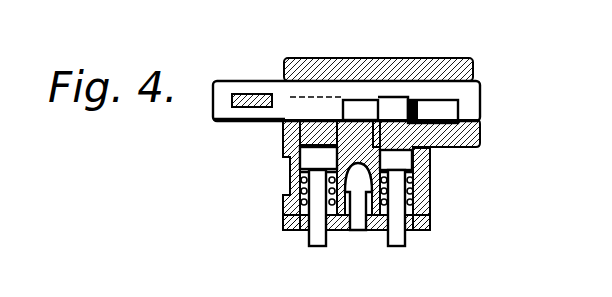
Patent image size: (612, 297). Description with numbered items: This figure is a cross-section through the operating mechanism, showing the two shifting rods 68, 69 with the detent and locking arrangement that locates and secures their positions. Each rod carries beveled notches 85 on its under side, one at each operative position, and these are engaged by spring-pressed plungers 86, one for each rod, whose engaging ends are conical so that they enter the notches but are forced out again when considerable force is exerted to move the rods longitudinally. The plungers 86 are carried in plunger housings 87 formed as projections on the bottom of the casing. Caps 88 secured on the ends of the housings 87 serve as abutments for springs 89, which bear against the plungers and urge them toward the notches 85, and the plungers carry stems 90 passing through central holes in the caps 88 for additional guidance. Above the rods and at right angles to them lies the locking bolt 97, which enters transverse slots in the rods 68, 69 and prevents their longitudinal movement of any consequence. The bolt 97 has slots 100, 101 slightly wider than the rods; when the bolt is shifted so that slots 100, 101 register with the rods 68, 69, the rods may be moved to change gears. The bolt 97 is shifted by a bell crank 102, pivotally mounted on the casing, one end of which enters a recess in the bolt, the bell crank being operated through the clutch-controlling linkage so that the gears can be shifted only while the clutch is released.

The rod 68 is at (318, 121).
The rod 69 is at (393, 117).
The notches 85 is at (492, 155).
The spring-pressed plungers 86 is at (298, 188).
The plunger housings 87 is at (290, 195).
The caps 88 is at (283, 215).
The springs 89 is at (290, 233).
The stems 90 is at (360, 232).
The locking bolt 97 is at (485, 112).
The slot 100 is at (435, 102).
The slot 101 is at (357, 105).
The bell crank 102 is at (283, 153).